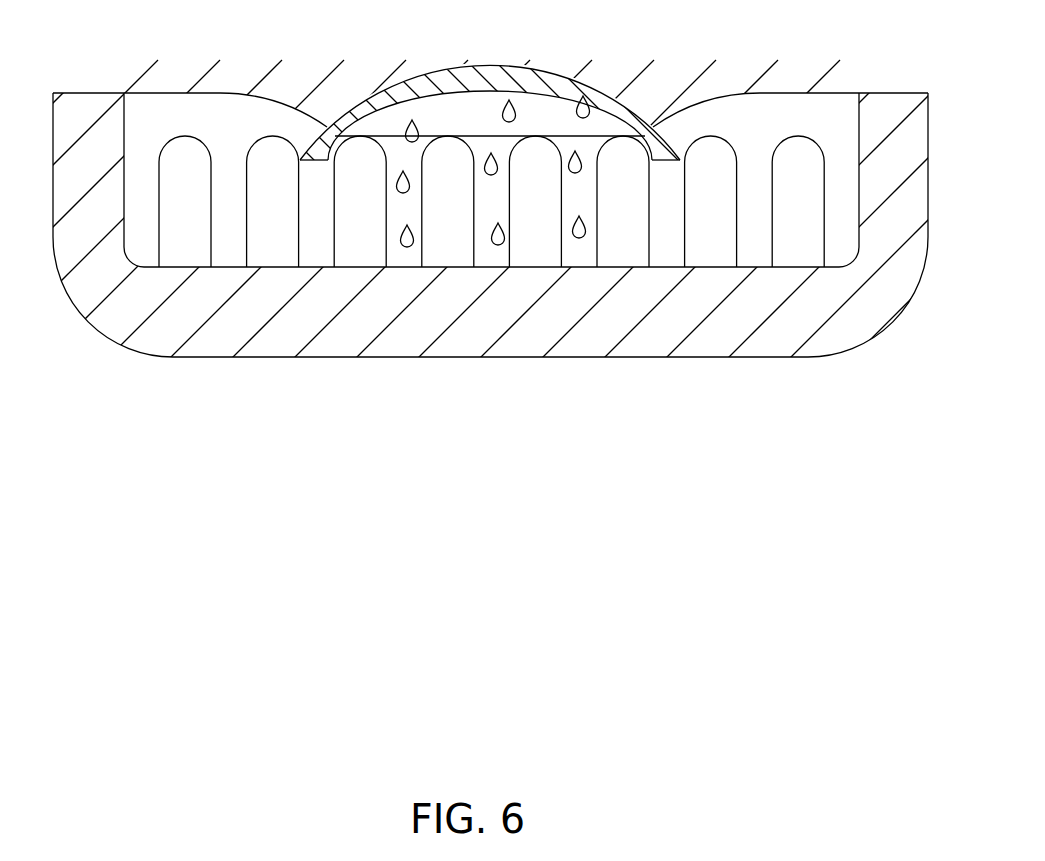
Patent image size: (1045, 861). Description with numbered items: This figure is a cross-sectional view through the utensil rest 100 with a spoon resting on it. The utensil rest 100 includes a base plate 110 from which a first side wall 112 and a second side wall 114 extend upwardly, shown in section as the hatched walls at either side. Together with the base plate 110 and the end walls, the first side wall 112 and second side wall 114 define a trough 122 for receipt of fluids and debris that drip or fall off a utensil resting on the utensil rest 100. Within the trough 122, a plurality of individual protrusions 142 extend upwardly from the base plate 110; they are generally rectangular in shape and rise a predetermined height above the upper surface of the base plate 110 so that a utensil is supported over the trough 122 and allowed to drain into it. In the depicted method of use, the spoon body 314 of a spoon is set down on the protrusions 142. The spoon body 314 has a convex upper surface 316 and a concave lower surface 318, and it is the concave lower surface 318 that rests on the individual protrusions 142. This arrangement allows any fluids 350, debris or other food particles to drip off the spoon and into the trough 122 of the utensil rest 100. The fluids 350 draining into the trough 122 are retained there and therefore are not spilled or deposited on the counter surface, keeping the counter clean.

The utensil rest 100 is at (44, 100).
The base plate 110 is at (263, 368).
The first side wall 112 is at (52, 240).
The second side wall 114 is at (930, 135).
The trough 122 is at (163, 104).
The individual protrusions 142 is at (187, 152).
The spoon body 314 is at (433, 75).
The convex upper surface 316 is at (558, 70).
The concave lower surface 318 is at (590, 112).
The fluids 350 is at (407, 245).